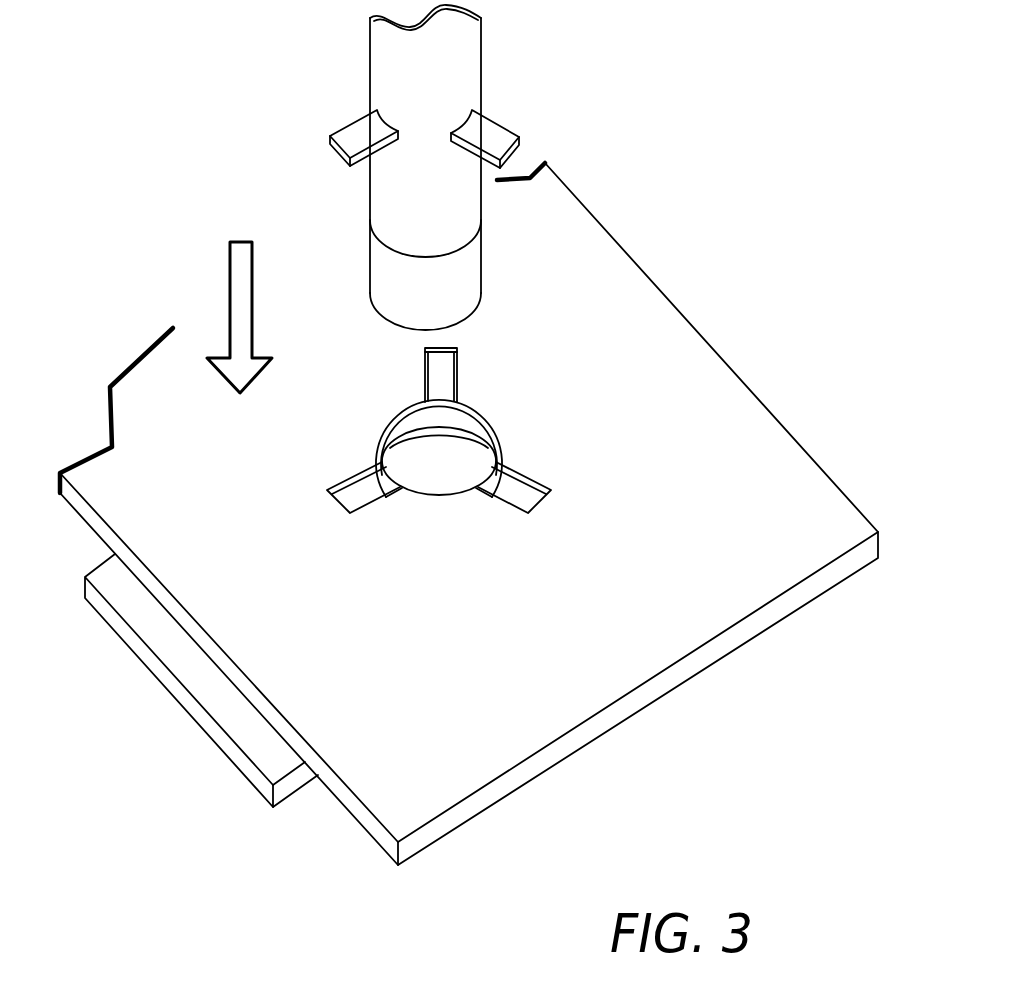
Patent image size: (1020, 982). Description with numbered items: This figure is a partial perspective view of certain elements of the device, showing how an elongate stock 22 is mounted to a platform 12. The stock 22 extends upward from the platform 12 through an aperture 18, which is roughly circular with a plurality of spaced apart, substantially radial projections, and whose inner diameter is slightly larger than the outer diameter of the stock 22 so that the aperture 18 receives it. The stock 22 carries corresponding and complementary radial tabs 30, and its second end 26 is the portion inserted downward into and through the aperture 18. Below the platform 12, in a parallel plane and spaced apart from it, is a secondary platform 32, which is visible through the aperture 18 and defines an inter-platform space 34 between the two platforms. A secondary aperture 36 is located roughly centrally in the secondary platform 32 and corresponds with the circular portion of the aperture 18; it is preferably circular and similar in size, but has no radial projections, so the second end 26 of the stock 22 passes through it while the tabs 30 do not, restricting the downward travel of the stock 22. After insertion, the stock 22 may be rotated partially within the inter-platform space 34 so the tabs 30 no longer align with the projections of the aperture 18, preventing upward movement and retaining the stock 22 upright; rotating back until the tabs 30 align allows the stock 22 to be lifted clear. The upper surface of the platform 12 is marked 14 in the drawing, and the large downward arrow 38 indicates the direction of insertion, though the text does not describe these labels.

The platform 12 is at (469, 514).
The top surface of plate 14 is at (760, 509).
The aperture 18 is at (480, 410).
The elongate stock 22 is at (468, 58).
The second end 26 is at (492, 512).
The radial tabs 30 is at (352, 133).
The secondary platform 32 is at (450, 425).
The inter-platform space 34 is at (395, 428).
The secondary aperture 36 is at (480, 440).
The force arrow 38 is at (227, 306).